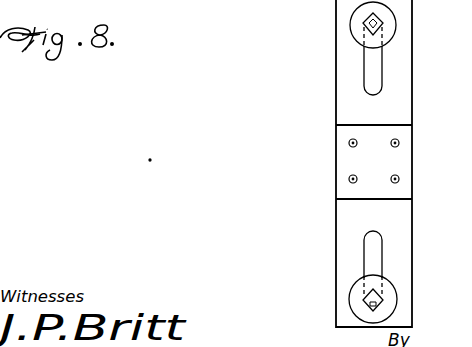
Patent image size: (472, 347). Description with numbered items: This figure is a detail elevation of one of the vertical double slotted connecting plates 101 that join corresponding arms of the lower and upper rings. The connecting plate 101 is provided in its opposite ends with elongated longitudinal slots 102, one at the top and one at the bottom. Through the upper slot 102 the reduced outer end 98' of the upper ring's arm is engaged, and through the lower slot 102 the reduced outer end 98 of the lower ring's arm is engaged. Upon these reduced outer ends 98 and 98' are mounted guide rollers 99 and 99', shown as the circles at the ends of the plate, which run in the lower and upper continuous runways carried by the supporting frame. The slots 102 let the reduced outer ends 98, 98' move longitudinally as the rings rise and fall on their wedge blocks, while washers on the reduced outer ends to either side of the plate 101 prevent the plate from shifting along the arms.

The reduced outer end 98 is at (413, 279).
The reduced outer end 98' is at (416, 20).
The guide roller 99 is at (341, 299).
The guide roller 99' is at (340, 34).
The double slotted connecting plate 101 is at (383, 120).
The elongated longitudinal slot 102 is at (375, 70).